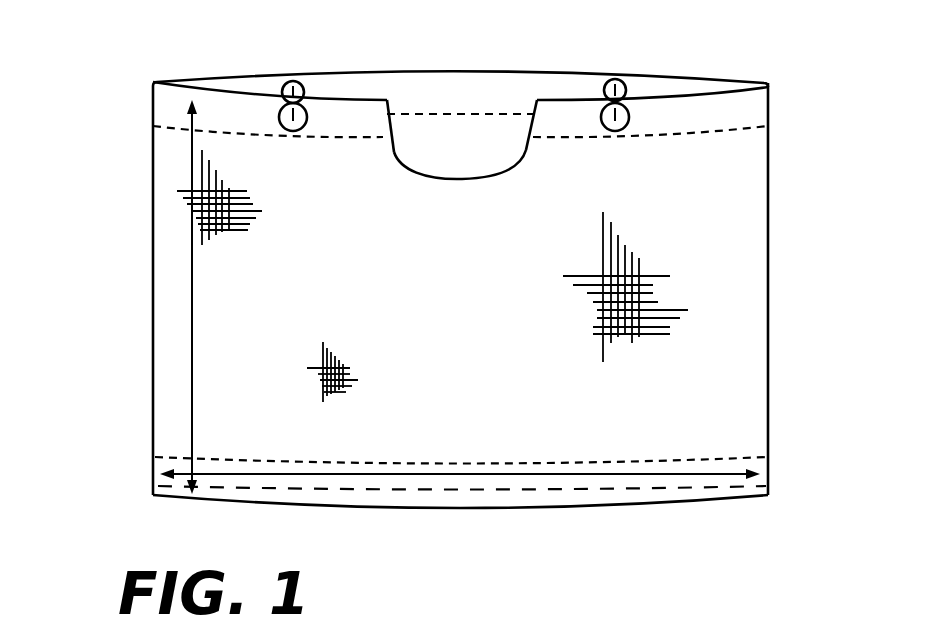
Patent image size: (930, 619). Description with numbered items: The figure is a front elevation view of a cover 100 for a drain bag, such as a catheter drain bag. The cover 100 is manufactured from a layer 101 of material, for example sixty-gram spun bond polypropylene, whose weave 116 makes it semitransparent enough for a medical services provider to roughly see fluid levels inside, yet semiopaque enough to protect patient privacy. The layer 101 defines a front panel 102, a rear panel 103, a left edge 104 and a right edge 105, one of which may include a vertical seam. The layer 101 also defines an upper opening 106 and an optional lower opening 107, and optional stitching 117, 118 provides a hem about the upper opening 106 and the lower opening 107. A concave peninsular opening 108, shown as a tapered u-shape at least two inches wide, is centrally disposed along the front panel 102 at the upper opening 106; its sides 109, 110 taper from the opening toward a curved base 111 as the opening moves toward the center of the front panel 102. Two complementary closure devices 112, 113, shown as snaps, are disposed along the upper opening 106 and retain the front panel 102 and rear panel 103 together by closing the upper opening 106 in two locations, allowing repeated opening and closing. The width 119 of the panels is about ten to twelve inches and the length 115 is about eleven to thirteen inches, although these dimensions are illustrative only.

The cover 100 is at (103, 253).
The layer of material 101 is at (647, 310).
The front panel 102 is at (528, 422).
The rear panel 103 is at (483, 156).
The left edge 104 is at (152, 347).
The right edge 105 is at (770, 228).
The upper opening 106 is at (357, 70).
The lower opening 107 is at (445, 527).
The concave peninsular opening 108 is at (435, 136).
The side of concave peninsular opening 109 is at (384, 125).
The side of concave peninsular opening 110 is at (536, 125).
The curved base 111 is at (460, 182).
The complementary closure device 112 is at (293, 80).
The complementary closure device 113 is at (618, 80).
The length 115 is at (348, 472).
The weave 116 is at (350, 373).
The stitching 117 is at (262, 138).
The stitching 118 is at (243, 465).
The width 119 is at (195, 273).